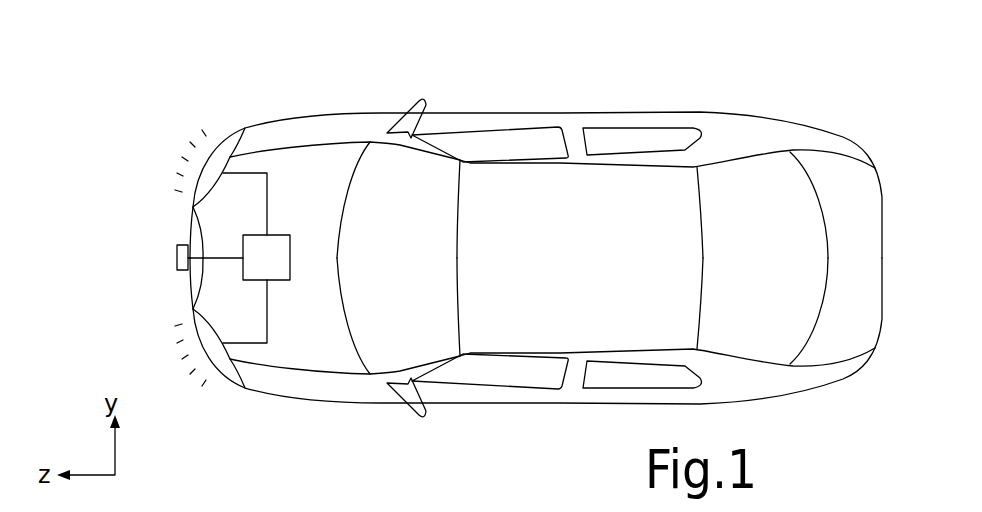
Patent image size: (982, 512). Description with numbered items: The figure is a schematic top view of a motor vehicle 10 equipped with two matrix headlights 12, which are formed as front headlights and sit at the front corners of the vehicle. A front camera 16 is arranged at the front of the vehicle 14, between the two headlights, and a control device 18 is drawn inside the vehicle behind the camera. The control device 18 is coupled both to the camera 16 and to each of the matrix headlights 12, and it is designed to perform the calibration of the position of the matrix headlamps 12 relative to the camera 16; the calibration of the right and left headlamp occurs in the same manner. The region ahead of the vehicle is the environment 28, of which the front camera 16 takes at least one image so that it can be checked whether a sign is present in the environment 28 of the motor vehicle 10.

The motor vehicle 10 is at (638, 84).
The matrix headlights 12 is at (221, 128).
The front of the vehicle 14 is at (180, 232).
The front camera 16 is at (177, 260).
The control device 18 is at (277, 258).
The environment 28 is at (122, 201).